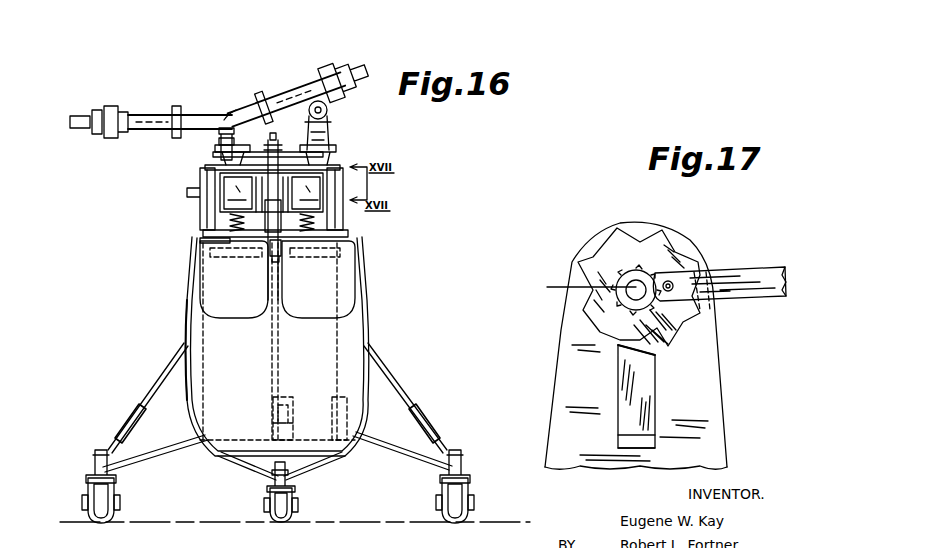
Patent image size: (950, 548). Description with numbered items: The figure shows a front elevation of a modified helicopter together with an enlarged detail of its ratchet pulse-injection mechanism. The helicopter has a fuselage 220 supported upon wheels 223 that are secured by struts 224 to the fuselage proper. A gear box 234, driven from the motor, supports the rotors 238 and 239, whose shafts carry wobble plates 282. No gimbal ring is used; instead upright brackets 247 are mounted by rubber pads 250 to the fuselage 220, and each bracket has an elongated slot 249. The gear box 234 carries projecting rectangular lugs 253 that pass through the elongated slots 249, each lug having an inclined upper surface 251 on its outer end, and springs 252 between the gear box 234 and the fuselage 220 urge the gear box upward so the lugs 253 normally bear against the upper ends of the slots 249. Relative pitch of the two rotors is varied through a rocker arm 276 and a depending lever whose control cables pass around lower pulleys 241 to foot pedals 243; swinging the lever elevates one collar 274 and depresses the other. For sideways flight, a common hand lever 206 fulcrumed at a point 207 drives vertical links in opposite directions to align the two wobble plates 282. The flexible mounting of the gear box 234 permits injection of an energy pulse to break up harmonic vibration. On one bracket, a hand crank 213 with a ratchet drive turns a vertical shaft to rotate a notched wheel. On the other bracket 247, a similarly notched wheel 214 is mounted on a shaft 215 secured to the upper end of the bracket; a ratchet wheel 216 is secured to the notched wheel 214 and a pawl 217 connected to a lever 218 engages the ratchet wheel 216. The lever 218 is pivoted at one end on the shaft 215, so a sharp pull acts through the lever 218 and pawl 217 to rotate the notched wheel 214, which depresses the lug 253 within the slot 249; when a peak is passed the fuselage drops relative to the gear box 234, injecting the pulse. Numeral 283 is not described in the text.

In FIG. 16, the hand lever 206 is at (232, 262).
In FIG. 16, the fulcrum point 207 is at (288, 262).
In FIG. 16, the hand crank 213 is at (185, 290).
In FIG. 17, the notched wheel 214 is at (634, 240).
In FIG. 17, the shaft 215 is at (574, 285).
In FIG. 17, the ratchet wheel 216 is at (641, 270).
In FIG. 17, the pawl 217 is at (672, 280).
In FIG. 17, the lever 218 is at (740, 268).
In FIG. 16, the fuselage 220 is at (366, 342).
In FIG. 16, the wheels 223 is at (114, 512).
In FIG. 16, the struts 224 is at (136, 446).
In FIG. 16, the gear box 234 is at (345, 186).
In FIG. 16, the rotor 238 is at (332, 106).
In FIG. 16, the rotor 239 is at (202, 109).
In FIG. 16, the lower pulleys 241 is at (208, 460).
In FIG. 16, the foot pedals 243 is at (357, 408).
In FIG. 16, the upright bracket 247 is at (344, 219).
In FIG. 17, the upright bracket 247 is at (560, 430).
In FIG. 17, the elongated slot 249 is at (680, 454).
In FIG. 16, the rubber pads 250 is at (203, 232).
In FIG. 17, the inclined upper surface 251 is at (620, 347).
In FIG. 16, the springs 252 is at (202, 242).
In FIG. 16, the rectangular lug 253 is at (200, 203).
In FIG. 17, the rectangular lug 253 is at (648, 390).
In FIG. 16, the collar 274 is at (350, 162).
In FIG. 16, the rocker arm 276 is at (283, 150).
In FIG. 16, the wobble plate 282 is at (215, 154).
In FIG. 16, the bracket 283 is at (325, 152).